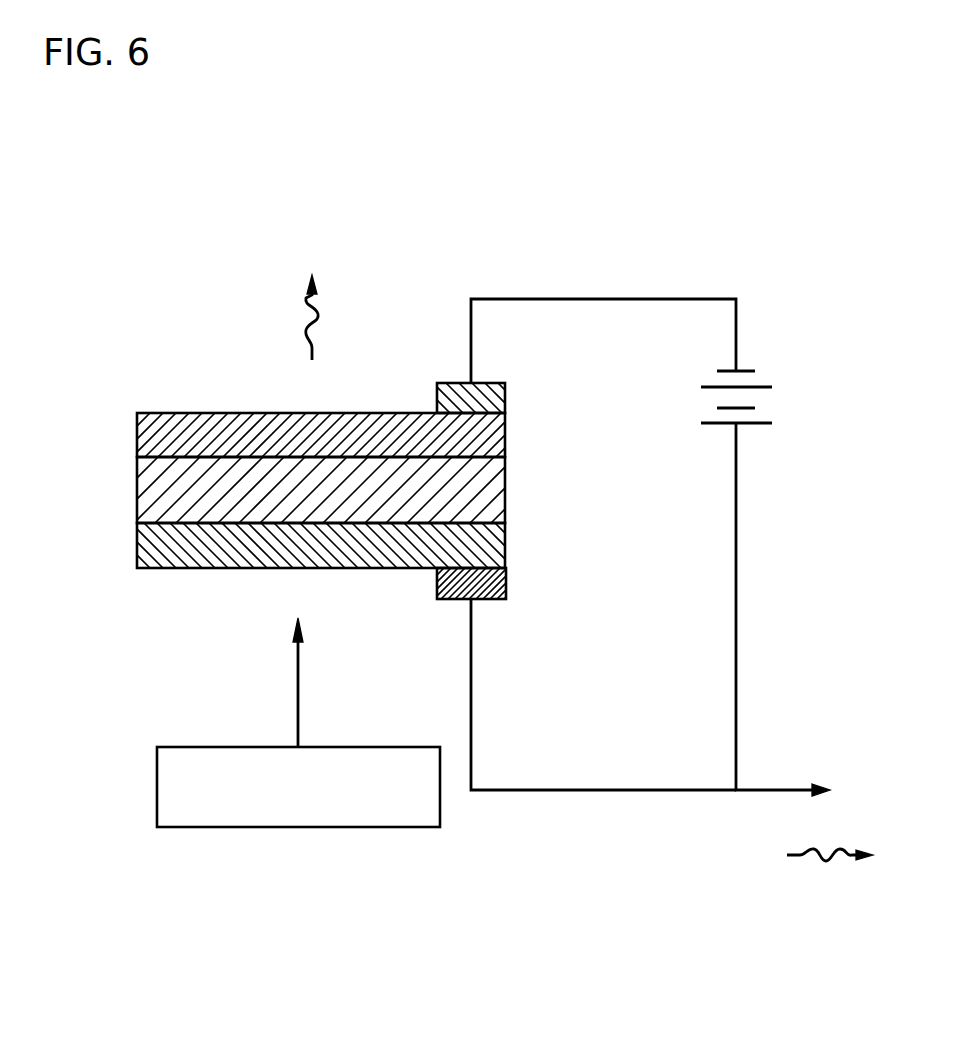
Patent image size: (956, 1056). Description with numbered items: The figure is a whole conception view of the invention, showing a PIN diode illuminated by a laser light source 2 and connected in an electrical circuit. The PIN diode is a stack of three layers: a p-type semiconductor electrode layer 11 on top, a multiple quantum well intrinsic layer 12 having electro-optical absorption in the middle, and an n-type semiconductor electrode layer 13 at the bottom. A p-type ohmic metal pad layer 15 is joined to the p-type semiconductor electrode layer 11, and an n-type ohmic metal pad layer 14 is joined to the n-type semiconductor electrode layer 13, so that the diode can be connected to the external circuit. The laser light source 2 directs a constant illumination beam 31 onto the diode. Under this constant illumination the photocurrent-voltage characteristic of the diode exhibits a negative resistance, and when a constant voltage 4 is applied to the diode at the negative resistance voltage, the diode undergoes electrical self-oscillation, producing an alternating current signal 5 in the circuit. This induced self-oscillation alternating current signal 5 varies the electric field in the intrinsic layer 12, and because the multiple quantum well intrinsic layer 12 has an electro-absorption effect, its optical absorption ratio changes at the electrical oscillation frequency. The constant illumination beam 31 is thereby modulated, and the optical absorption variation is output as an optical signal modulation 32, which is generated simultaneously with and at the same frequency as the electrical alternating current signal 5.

The laser light source 2 is at (340, 818).
The constant voltage 4 is at (770, 402).
The self oscillation alternating current signal 5 is at (805, 868).
The p-type semiconductor electrode layer 11 is at (138, 445).
The multiple quantum well intrinsic layer 12 is at (142, 507).
The n-type semiconductor electrode layer 13 is at (142, 553).
The n-type ohmic metal pad layer 14 is at (506, 583).
The p-type ohmic metal pad layer 15 is at (505, 398).
The constant illumination beam 31 is at (298, 697).
The optical signal modulation 32 is at (307, 308).